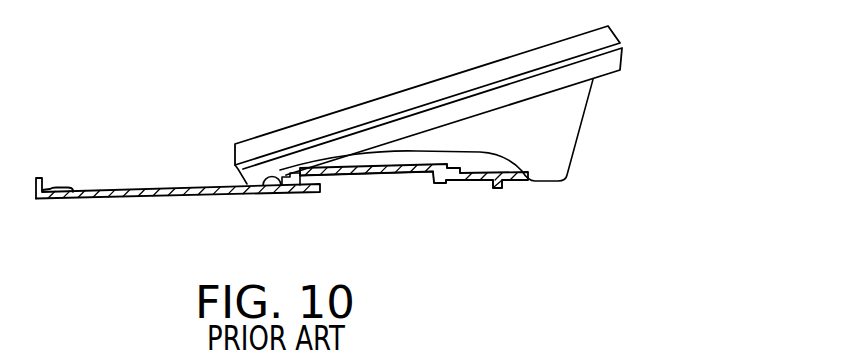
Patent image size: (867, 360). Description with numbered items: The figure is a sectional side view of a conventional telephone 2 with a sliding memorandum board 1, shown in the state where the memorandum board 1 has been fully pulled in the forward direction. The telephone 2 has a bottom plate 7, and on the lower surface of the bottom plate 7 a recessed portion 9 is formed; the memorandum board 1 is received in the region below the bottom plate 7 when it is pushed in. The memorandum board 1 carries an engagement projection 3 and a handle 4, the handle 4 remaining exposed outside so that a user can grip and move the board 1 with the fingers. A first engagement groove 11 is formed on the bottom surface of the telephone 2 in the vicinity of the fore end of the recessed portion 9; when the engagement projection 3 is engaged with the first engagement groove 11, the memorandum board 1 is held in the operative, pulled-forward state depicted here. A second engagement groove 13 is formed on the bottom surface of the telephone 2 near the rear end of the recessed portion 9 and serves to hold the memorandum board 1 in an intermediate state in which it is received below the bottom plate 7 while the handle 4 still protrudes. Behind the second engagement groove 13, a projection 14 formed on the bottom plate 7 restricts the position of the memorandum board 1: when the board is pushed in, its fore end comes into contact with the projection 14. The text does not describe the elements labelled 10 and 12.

The memorandum board 1 is at (114, 184).
The telephone 2 is at (586, 138).
The engagement projection 3 is at (275, 192).
The handle 4 is at (40, 177).
The bottom plate 7 is at (357, 177).
The recessed portion 9 is at (398, 177).
The latch 10 is at (300, 186).
The first engagement groove 11 is at (274, 175).
The projection 12 is at (432, 184).
The second engagement groove 13 is at (446, 179).
The projection 14 is at (498, 189).